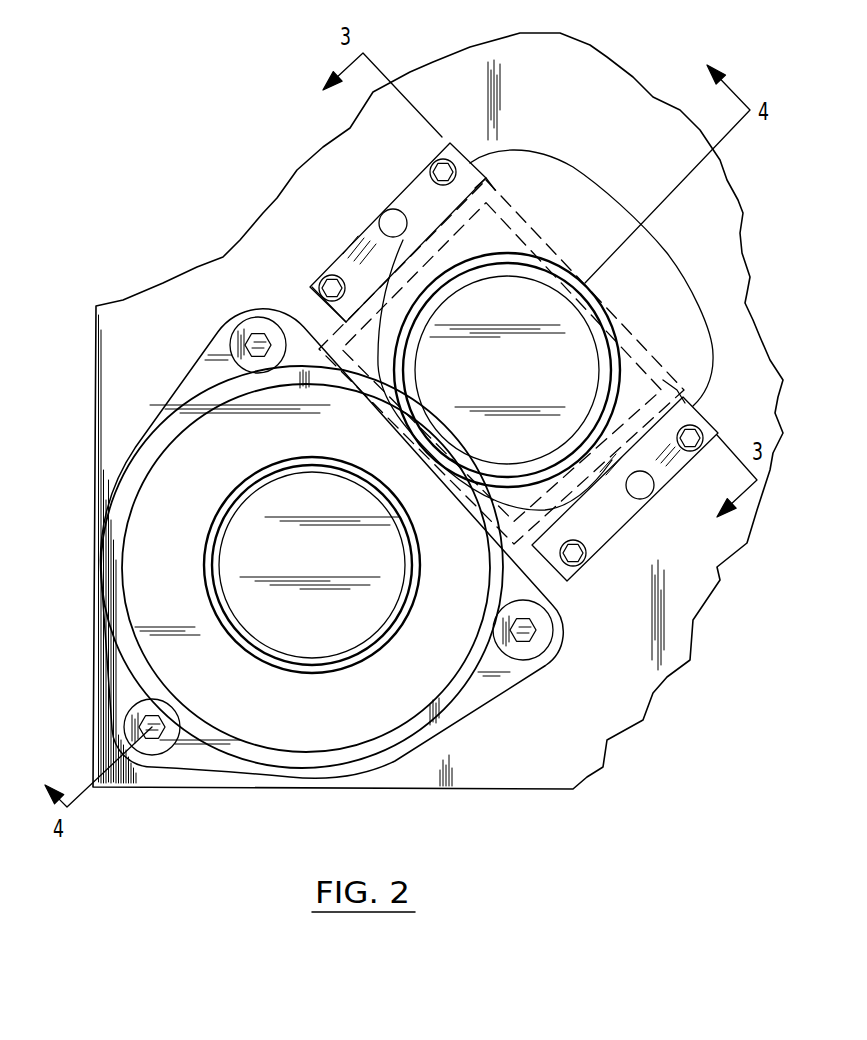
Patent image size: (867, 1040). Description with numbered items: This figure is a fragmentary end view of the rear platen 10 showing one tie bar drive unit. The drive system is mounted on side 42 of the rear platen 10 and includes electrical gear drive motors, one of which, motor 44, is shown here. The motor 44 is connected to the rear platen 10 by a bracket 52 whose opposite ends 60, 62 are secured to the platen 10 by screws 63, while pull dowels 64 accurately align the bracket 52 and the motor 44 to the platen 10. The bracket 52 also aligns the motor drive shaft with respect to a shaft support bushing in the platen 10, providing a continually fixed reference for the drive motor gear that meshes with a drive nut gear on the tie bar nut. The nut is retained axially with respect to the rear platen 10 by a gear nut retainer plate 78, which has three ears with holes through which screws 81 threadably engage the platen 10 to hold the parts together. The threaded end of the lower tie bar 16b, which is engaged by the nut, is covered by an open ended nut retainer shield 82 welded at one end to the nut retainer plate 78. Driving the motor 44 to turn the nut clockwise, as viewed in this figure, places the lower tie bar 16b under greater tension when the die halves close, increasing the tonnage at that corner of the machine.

The rear platen 10 is at (441, 441).
The side 42 is at (733, 350).
The electrical gear drive motor 44 is at (683, 303).
The bracket 52 is at (317, 303).
The end of bracket 60 is at (347, 250).
The end of bracket 62 is at (594, 545).
The screws 63 is at (453, 158).
The pull dowels 64 is at (393, 222).
The gear nut retainer plate 78 is at (475, 694).
The screws 81 is at (268, 342).
The nut retainer shield 82 is at (285, 458).
The lower tie bar 16b is at (328, 640).